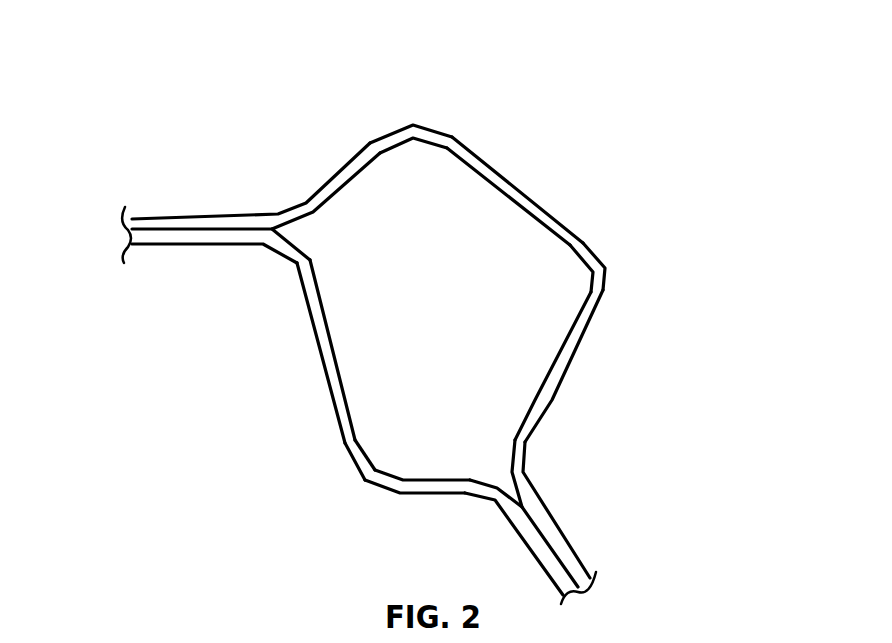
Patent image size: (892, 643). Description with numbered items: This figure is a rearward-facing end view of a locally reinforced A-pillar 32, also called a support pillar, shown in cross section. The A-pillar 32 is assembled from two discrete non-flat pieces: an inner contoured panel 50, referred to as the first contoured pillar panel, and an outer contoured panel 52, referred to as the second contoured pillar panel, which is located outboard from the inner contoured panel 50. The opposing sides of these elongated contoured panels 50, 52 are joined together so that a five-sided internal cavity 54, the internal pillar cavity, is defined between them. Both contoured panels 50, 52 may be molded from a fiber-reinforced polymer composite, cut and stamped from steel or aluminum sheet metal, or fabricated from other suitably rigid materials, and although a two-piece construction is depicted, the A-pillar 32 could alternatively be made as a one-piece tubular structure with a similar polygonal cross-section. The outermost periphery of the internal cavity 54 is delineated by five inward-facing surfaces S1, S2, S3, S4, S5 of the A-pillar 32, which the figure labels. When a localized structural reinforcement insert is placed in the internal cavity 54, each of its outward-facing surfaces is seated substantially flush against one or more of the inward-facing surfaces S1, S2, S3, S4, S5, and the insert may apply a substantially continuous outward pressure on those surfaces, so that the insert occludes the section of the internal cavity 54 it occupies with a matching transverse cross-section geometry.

The A-pillar 32 is at (254, 80).
The inner contoured panel 50 is at (332, 400).
The outer contoured panel 52 is at (497, 173).
The internal cavity 54 is at (369, 210).
The first inward-facing surface S1 is at (438, 476).
The second inward-facing surface S2 is at (538, 384).
The third inward-facing surface S3 is at (523, 211).
The fourth inward-facing surface S4 is at (378, 153).
The fifth inward-facing surface S5 is at (333, 347).